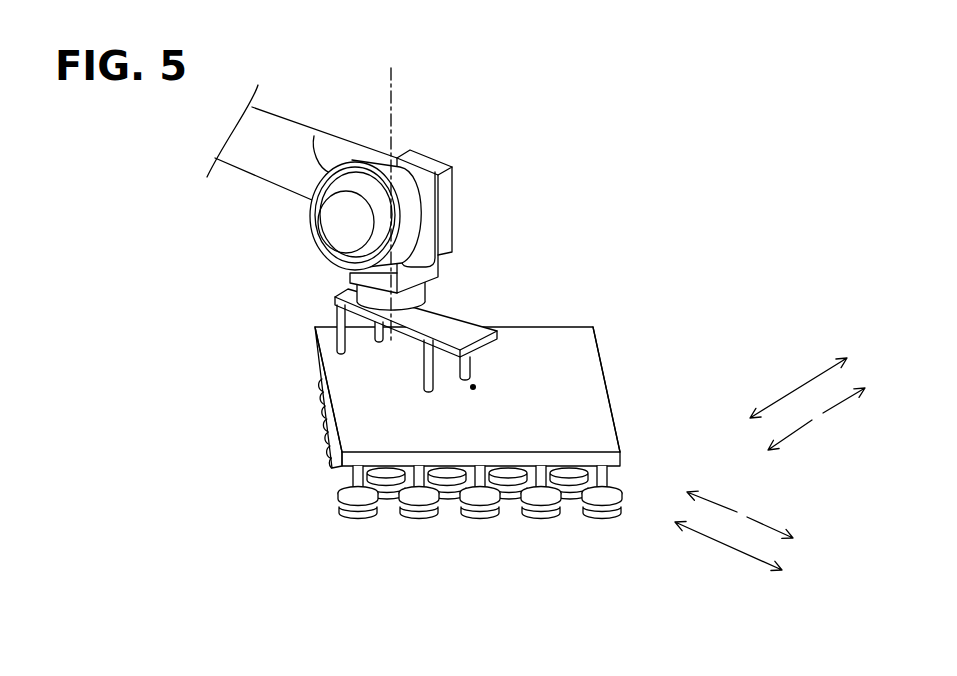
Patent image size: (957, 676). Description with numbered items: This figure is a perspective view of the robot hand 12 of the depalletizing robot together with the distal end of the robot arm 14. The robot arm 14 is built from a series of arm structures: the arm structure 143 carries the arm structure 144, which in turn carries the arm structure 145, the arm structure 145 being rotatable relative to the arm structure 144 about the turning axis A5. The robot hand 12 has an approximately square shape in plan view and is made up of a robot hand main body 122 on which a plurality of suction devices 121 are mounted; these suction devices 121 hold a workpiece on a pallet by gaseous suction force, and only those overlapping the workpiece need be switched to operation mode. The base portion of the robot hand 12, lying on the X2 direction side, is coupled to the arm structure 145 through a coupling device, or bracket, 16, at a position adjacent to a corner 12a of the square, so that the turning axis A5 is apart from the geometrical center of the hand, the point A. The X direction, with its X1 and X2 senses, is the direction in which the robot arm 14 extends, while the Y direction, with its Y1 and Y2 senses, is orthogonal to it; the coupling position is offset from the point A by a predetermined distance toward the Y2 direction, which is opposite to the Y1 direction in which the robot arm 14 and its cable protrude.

The robot hand 12 is at (605, 363).
The corner 12a is at (315, 327).
The suction devices 121 is at (470, 519).
The robot hand main body 122 is at (612, 408).
The robot arm 14 is at (437, 158).
The arm structure 143 is at (283, 135).
The arm structure 144 is at (445, 237).
The arm structure 145 is at (428, 287).
The coupling device (bracket) 16 is at (455, 327).
The rotation axis A5 is at (393, 90).
The point A is at (473, 387).
The X direction X is at (728, 543).
The X1 direction X1 is at (770, 512).
The X2 direction X2 is at (715, 490).
The Y direction Y is at (798, 388).
The Y1 direction Y1 is at (795, 443).
The Y2 direction Y2 is at (844, 414).